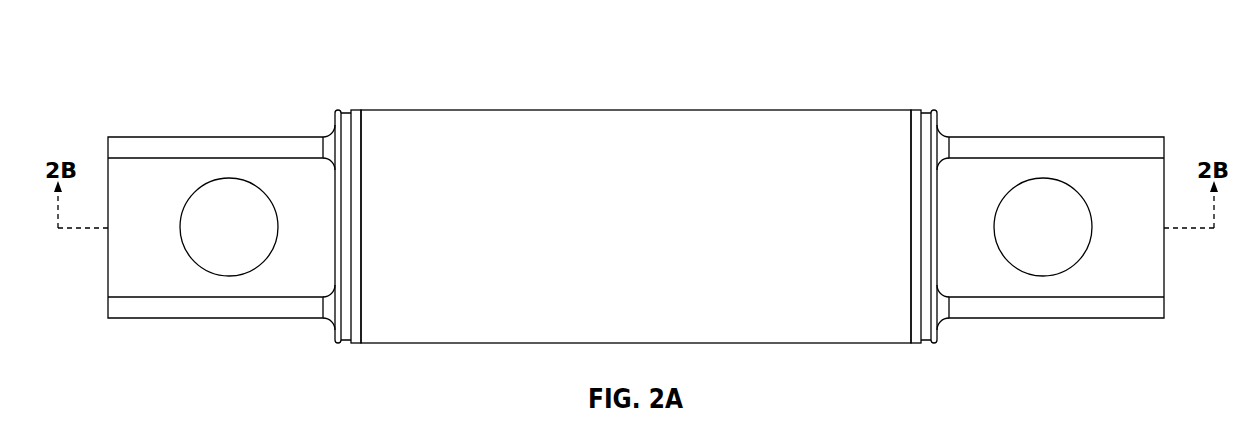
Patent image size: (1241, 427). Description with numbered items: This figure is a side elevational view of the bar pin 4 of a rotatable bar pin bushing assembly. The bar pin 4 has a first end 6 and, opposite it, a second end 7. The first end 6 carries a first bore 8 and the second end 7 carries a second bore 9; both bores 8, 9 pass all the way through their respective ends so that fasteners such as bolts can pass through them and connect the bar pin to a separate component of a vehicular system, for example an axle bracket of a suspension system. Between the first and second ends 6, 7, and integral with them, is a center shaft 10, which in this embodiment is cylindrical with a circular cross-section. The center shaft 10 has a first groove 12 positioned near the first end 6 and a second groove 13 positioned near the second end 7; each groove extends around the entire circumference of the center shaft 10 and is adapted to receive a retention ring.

The bar pin 4 is at (126, 56).
The first end 6 is at (151, 173).
The second end 7 is at (1125, 175).
The first bore 8 is at (230, 263).
The second bore 9 is at (1045, 263).
The center shaft 10 is at (664, 108).
The first groove 12 is at (355, 113).
The second groove 13 is at (917, 120).